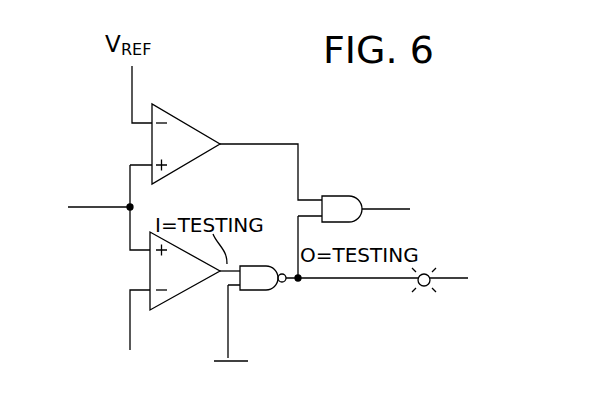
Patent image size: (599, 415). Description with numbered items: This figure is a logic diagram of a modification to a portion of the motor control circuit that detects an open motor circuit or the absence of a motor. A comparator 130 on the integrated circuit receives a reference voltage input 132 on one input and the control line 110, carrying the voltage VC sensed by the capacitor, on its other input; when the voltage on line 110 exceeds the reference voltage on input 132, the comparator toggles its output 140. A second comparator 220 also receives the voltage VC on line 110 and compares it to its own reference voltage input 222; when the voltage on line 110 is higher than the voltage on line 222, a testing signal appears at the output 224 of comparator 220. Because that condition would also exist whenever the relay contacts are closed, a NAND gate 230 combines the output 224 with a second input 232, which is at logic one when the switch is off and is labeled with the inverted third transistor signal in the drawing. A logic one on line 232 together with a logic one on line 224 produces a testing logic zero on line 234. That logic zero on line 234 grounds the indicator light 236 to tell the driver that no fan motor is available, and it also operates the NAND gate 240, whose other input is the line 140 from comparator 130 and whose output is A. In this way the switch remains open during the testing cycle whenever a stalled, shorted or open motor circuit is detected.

The control line 110 is at (90, 205).
The comparator 130 is at (184, 122).
The reference voltage input 132 is at (131, 84).
The output 140 is at (298, 172).
The second comparator 220 is at (150, 268).
The reference voltage input 222 is at (130, 322).
The output 224 is at (222, 273).
The NAND gate 230 is at (266, 290).
The second input 232 is at (228, 340).
The line 234 is at (310, 210).
The indicator light 236 is at (432, 285).
The NAND gate 240 is at (355, 203).